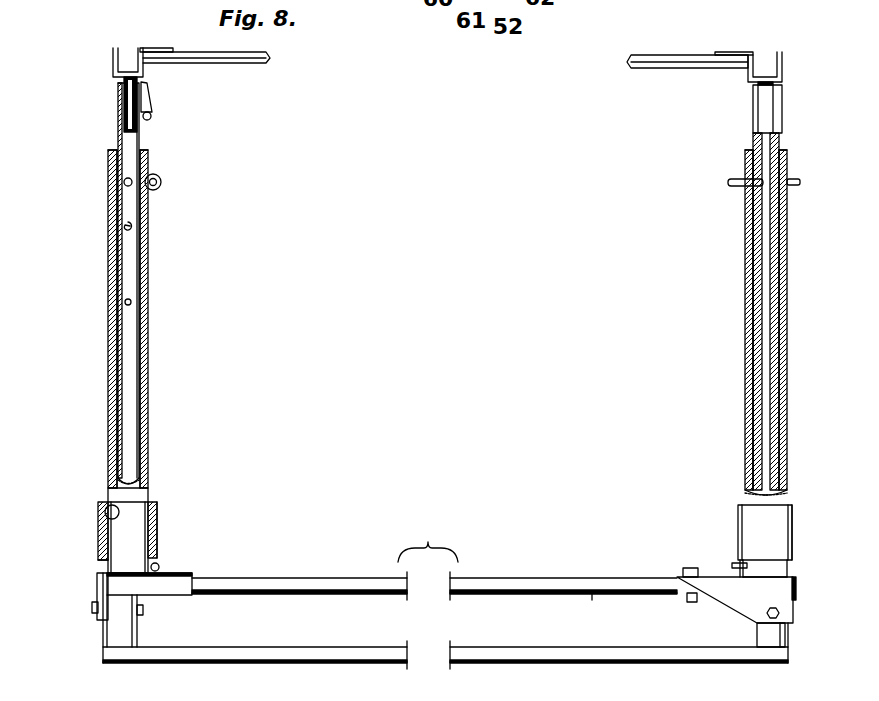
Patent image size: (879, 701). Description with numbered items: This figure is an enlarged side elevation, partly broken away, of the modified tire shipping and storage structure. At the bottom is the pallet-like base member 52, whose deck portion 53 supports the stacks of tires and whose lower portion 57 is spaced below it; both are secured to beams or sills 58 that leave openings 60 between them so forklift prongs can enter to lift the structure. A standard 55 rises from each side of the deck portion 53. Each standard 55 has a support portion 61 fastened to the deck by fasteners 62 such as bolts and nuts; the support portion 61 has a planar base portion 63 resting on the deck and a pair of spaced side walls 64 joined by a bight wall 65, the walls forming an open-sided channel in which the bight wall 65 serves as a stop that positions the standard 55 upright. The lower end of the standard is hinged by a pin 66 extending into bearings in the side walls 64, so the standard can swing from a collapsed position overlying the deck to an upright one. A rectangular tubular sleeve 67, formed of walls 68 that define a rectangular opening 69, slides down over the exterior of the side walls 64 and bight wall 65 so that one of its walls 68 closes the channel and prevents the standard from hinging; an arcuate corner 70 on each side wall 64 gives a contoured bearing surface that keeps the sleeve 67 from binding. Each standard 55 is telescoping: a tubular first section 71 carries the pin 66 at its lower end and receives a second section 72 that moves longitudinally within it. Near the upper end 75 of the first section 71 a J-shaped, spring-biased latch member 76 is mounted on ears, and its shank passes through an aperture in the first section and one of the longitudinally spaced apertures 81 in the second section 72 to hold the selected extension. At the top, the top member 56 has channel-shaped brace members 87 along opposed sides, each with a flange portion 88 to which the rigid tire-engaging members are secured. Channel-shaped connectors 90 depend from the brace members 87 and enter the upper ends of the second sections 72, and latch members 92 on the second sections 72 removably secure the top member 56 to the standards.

The base member 52 is at (793, 634).
The deck portion 53 is at (512, 578).
The standard 55 is at (108, 333).
The top member 56 is at (648, 55).
The lower portion 57 is at (265, 647).
The beam 58 is at (137, 634).
The opening 60 is at (595, 607).
The support portion 61 is at (97, 600).
The fastener 62 is at (92, 610).
The planar base portion 63 is at (192, 573).
The side wall 64 is at (135, 502).
The bight wall 65 is at (103, 565).
The pin 66 is at (158, 563).
The sleeve 67 is at (157, 518).
The sleeve wall 68 is at (100, 520).
The rectangular opening 69 is at (112, 505).
The arcuate corner 70 is at (148, 502).
The first section 71 is at (148, 280).
The second section 72 is at (117, 110).
The upper end 75 is at (148, 152).
The latch member 76 is at (161, 181).
The aperture 81 is at (144, 224).
The brace member 87 is at (113, 56).
The flange portion 88 is at (152, 48).
The connector 90 is at (150, 80).
The latch member 92 is at (170, 115).